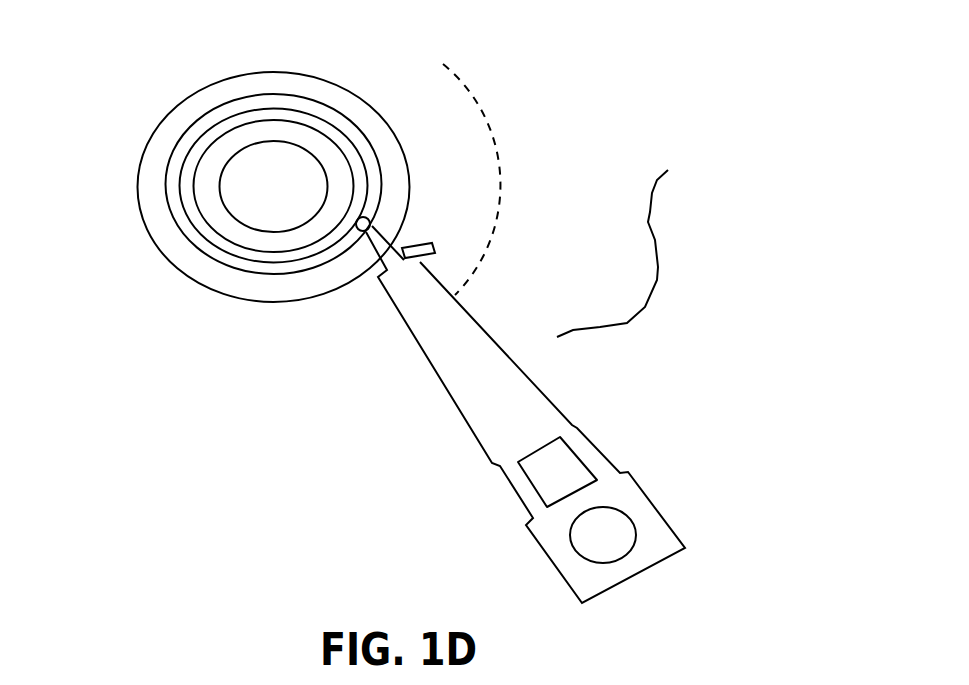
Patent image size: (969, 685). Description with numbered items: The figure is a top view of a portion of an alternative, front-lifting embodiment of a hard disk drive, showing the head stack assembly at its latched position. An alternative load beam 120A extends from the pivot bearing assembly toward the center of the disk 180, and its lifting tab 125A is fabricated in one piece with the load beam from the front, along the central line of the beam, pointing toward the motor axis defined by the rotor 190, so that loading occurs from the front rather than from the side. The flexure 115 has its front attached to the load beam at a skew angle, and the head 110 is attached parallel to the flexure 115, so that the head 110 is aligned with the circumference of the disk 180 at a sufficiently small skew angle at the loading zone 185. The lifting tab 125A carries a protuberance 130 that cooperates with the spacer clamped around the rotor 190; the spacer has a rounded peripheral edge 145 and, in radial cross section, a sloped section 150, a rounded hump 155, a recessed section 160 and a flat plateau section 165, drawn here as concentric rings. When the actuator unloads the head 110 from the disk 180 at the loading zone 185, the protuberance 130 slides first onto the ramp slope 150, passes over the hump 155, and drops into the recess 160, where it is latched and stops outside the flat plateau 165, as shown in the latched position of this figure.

The head 110 is at (432, 248).
The flexure 115 is at (437, 263).
The alternative load beam 120A is at (485, 400).
The lifting tab 125A is at (378, 256).
The protuberance 130 is at (350, 137).
The rounded peripheral edge 145 is at (378, 103).
The sloped section 150 is at (333, 95).
The rounded hump 155 is at (288, 93).
The recessed section 160 is at (245, 110).
The plateau section 165 is at (216, 157).
The disk 180 is at (654, 173).
The loading zone 185 is at (480, 163).
The rotor 190 is at (253, 193).